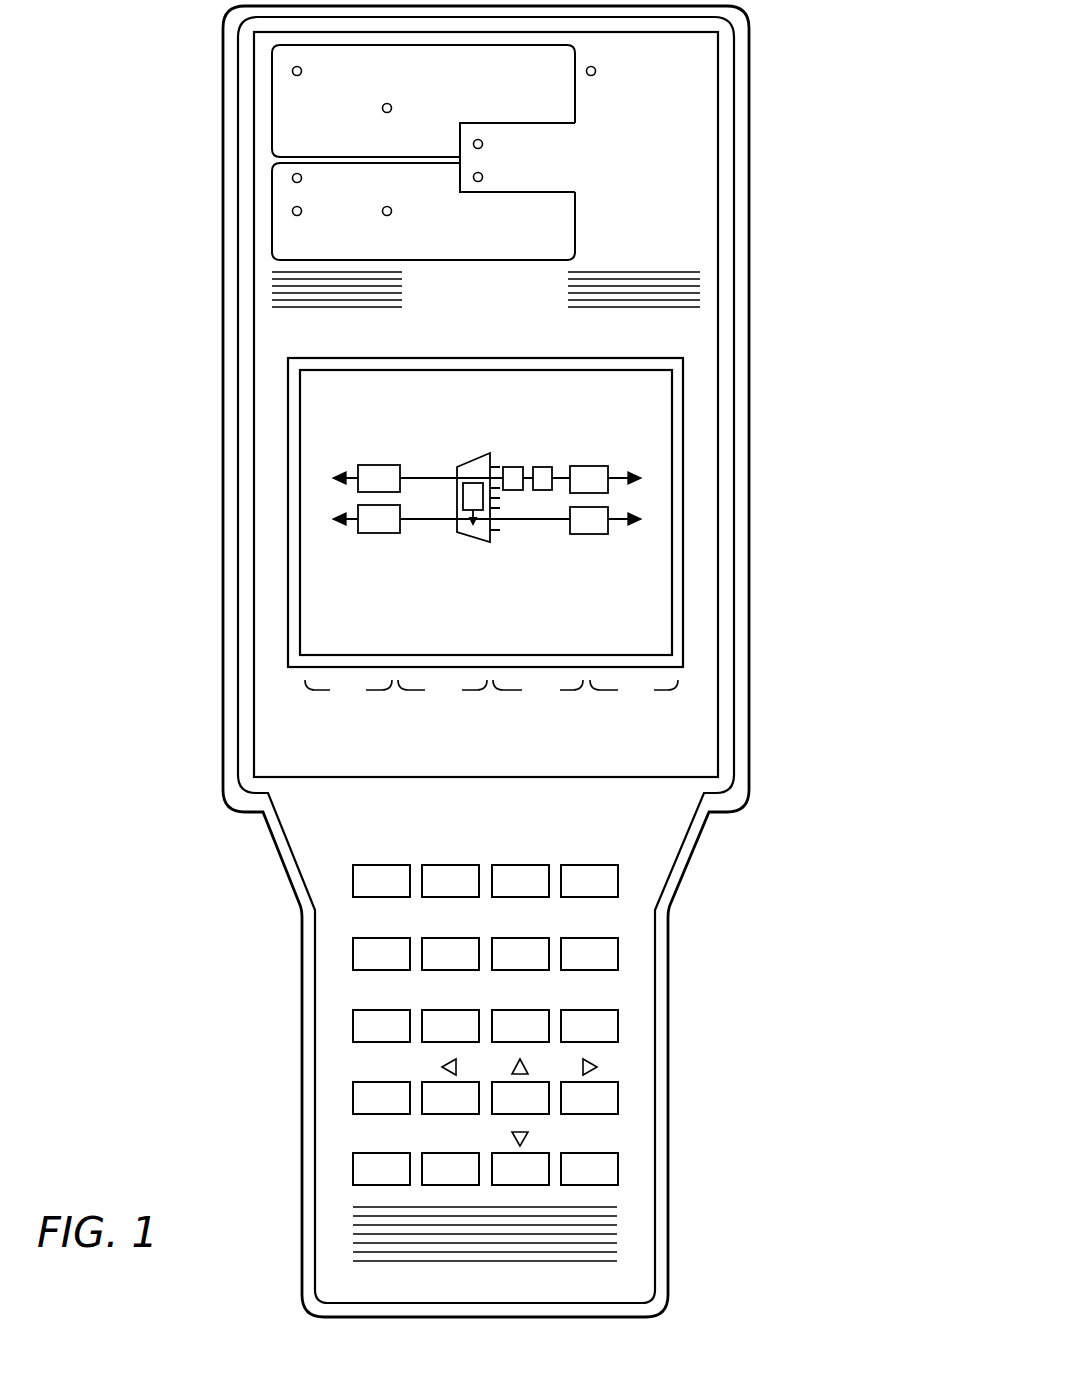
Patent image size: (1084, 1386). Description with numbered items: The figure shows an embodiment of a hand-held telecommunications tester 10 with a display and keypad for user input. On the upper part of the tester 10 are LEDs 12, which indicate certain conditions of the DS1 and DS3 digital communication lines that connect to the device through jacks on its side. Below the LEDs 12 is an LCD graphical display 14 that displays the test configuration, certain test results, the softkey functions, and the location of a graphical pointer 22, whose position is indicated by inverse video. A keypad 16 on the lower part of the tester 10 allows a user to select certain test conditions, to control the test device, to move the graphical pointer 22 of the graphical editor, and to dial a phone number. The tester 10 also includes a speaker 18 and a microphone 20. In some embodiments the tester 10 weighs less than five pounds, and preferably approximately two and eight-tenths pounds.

The hand-held telecommunications tester 10 is at (128, 375).
The LEDs 12 is at (213, 35).
The LCD graphical display 14 is at (213, 663).
The keypad 16 is at (678, 933).
The speaker 18 is at (750, 110).
The microphone 20 is at (672, 1245).
The graphical pointer 22 is at (500, 527).